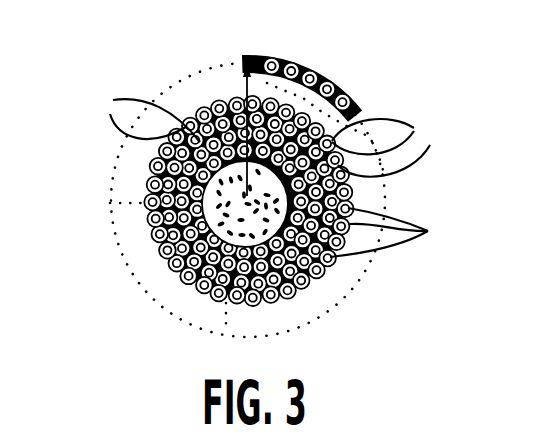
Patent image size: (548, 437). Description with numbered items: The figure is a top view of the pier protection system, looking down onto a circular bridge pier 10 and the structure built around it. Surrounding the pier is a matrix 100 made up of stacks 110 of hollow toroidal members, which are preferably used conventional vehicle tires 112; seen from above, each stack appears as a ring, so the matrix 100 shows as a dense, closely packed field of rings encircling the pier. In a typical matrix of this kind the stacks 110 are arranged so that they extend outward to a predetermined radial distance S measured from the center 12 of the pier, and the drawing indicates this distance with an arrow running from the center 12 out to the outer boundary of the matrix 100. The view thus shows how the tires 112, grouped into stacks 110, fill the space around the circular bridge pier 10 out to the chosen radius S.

The matrix 100 is at (347, 70).
The circular bridge pier 10 is at (216, 109).
The center of the pier 12 is at (168, 204).
The predetermined radial distance S is at (245, 88).
The stacks 110 is at (264, 130).
The vehicle tires 112 is at (403, 232).